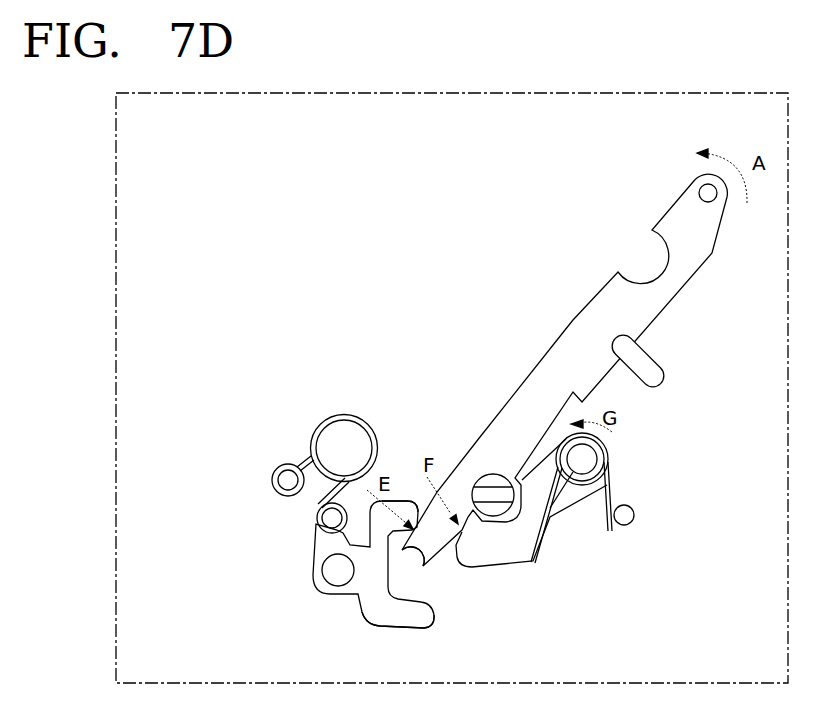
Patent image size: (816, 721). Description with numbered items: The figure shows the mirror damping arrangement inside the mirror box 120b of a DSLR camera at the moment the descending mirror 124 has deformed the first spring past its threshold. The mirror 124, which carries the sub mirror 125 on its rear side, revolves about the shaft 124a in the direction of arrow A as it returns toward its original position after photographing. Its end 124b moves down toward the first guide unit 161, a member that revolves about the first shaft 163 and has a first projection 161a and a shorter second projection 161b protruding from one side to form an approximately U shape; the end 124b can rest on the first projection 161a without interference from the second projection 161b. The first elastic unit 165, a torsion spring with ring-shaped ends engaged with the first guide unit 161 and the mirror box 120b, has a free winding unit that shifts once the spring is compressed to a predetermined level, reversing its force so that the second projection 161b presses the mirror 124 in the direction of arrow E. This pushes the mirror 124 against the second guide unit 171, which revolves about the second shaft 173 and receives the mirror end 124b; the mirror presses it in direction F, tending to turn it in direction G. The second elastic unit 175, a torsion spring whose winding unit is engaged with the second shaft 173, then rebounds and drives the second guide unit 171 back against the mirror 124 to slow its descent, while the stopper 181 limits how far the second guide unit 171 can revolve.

The mirror box 120b is at (441, 118).
The mirror 124 is at (532, 396).
The shaft 124a is at (694, 183).
The end of the mirror 124b is at (414, 565).
The sub mirror 125 is at (658, 372).
The stopper 181 is at (492, 478).
The second guide unit 171 is at (483, 550).
The second shaft 173 is at (587, 457).
The second elastic unit 175 is at (618, 495).
The first guide unit 161 is at (275, 562).
The first projection 161a is at (430, 622).
The second projection 161b is at (419, 484).
The first shaft 163 is at (335, 578).
The first elastic unit 165 is at (325, 416).